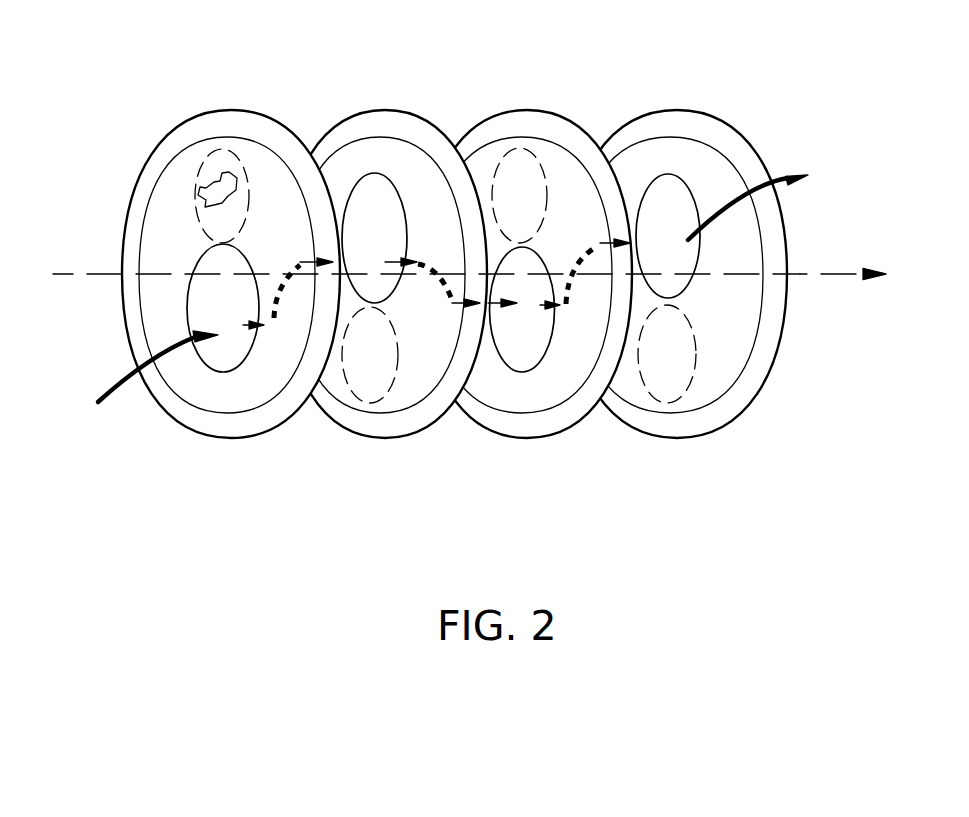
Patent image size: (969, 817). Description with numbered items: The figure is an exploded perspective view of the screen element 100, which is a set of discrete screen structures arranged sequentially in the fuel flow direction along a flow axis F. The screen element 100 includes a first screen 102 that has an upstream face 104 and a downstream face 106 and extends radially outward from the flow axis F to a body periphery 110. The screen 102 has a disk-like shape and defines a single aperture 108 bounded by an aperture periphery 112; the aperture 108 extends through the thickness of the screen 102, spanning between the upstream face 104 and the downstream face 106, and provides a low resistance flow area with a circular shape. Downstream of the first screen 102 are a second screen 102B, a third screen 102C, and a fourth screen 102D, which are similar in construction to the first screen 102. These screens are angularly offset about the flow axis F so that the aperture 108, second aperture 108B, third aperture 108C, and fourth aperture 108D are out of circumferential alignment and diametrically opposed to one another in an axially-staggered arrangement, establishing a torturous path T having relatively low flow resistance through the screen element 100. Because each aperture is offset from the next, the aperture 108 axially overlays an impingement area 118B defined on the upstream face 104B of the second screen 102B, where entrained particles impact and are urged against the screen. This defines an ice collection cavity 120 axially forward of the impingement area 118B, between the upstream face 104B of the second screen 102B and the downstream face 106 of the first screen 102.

The screen element 100 is at (266, 550).
The screen 102 is at (298, 232).
The second screen 102B is at (458, 248).
The third screen 102C is at (599, 236).
The fourth screen 102D is at (748, 314).
The upstream face 104 is at (160, 208).
The upstream face of second screen 104B is at (431, 342).
The downstream face 106 is at (301, 120).
The aperture 108 is at (240, 313).
The second aperture 108B is at (398, 228).
The third aperture 108C is at (544, 344).
The fourth aperture 108D is at (691, 228).
The body periphery 110 is at (198, 435).
The aperture periphery 112 is at (250, 352).
The impingement area 118B is at (370, 375).
The ice collection cavity 120 is at (225, 180).
The torturous path T is at (722, 232).
The flow axis F is at (808, 276).